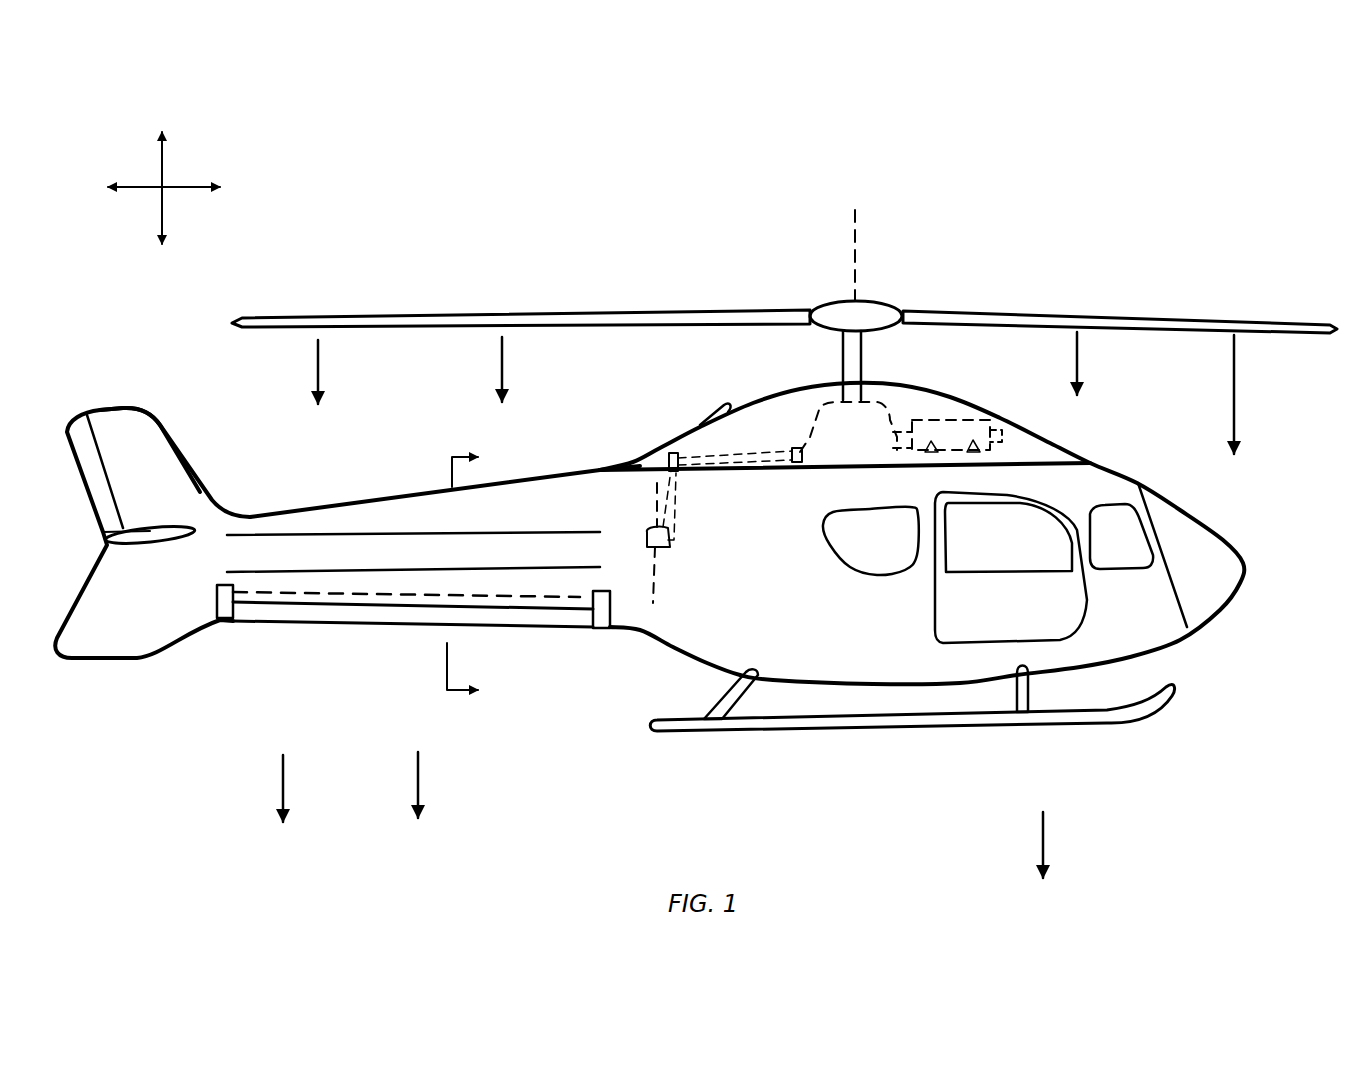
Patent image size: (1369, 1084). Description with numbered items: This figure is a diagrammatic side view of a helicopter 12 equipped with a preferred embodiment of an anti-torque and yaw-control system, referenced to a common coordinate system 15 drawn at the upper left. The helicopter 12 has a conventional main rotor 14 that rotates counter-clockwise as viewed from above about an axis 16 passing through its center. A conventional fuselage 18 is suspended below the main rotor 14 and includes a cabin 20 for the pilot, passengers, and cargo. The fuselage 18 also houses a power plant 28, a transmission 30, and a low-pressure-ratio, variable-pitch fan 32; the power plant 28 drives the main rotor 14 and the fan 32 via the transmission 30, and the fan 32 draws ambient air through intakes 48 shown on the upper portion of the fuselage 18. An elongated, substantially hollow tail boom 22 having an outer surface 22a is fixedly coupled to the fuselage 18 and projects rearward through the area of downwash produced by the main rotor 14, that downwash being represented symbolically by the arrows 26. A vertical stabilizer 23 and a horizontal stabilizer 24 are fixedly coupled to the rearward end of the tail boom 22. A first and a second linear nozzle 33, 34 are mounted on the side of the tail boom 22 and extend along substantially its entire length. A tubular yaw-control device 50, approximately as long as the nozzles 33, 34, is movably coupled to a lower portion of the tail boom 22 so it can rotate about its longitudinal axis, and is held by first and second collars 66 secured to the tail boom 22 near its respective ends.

The helicopter 12 is at (1128, 212).
The main rotor 14 is at (962, 316).
The coordinate system 15 is at (163, 185).
The axis 16 is at (857, 250).
The fuselage 18 is at (678, 662).
The cabin 20 is at (1142, 556).
The tail boom 22 is at (436, 486).
The outer surface 22a is at (522, 496).
The vertical stabilizer 23 is at (163, 461).
The horizontal stabilizer 24 is at (151, 545).
The arrows 26 is at (318, 372).
The power plant 28 is at (960, 432).
The transmission 30 is at (835, 452).
The fan 32 is at (668, 572).
The first nozzle 33 is at (492, 520).
The second nozzle 34 is at (248, 570).
The intakes 48 is at (698, 420).
The yaw-control device 50 is at (344, 628).
The collars 66 is at (217, 607).